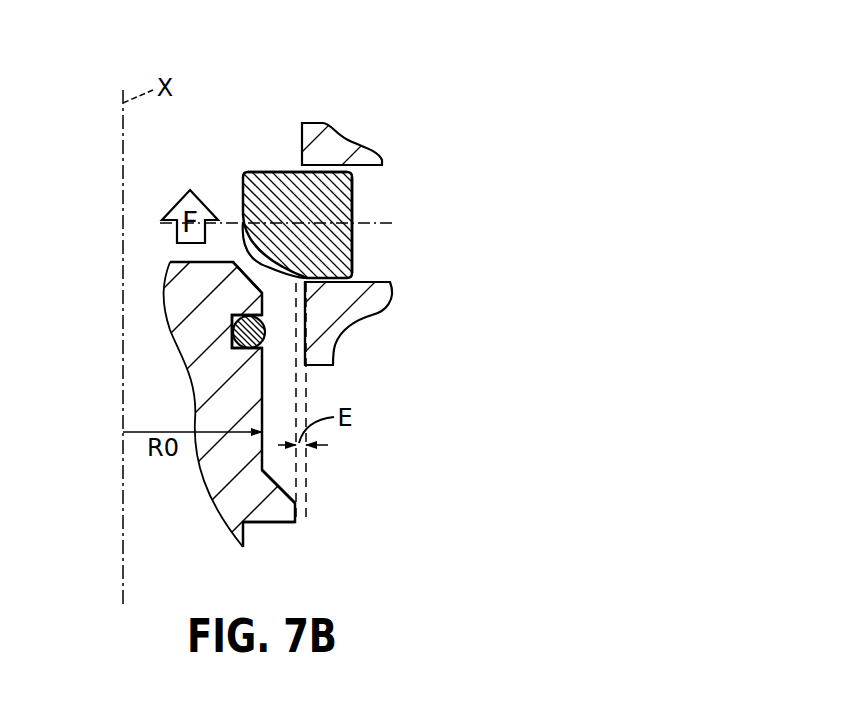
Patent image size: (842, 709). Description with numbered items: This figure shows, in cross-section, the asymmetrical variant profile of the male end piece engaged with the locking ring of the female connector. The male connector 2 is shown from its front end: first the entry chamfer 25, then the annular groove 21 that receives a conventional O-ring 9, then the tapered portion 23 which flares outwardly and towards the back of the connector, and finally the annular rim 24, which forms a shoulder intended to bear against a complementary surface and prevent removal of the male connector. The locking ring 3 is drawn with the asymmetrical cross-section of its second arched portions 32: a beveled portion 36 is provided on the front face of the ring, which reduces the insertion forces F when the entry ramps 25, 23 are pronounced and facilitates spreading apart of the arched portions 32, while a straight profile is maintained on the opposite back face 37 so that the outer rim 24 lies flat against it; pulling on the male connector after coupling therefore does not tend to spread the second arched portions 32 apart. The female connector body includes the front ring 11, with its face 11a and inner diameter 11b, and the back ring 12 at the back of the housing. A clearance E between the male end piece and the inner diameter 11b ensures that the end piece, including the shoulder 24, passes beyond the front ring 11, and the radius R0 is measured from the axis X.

The wheel rim / first annular part 2 is at (188, 490).
The ring member 3 is at (385, 185).
The O-ring 9 is at (232, 352).
The front ring 11 is at (322, 367).
The flange upper face 11a is at (333, 283).
The inner diameter 11b is at (305, 332).
The back ring 12 is at (362, 137).
The annular groove 21 is at (232, 320).
The tapered portion 23 is at (278, 487).
The annular rim 24 is at (268, 524).
The entry chamfer 25 is at (240, 272).
The second arched portions 32 is at (345, 200).
The beveled portion 36 is at (247, 253).
The back face 37 is at (263, 170).